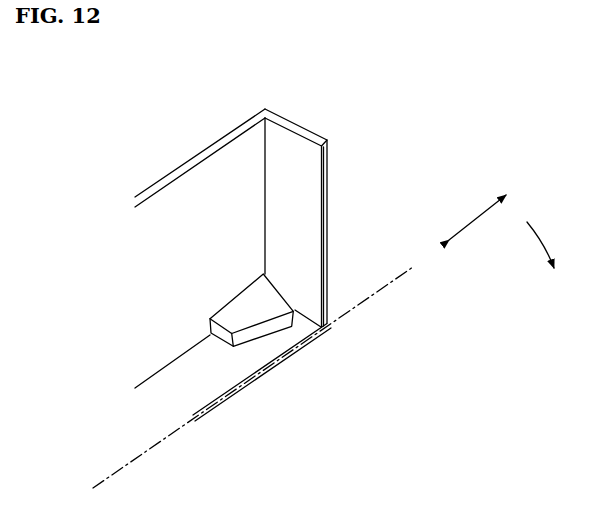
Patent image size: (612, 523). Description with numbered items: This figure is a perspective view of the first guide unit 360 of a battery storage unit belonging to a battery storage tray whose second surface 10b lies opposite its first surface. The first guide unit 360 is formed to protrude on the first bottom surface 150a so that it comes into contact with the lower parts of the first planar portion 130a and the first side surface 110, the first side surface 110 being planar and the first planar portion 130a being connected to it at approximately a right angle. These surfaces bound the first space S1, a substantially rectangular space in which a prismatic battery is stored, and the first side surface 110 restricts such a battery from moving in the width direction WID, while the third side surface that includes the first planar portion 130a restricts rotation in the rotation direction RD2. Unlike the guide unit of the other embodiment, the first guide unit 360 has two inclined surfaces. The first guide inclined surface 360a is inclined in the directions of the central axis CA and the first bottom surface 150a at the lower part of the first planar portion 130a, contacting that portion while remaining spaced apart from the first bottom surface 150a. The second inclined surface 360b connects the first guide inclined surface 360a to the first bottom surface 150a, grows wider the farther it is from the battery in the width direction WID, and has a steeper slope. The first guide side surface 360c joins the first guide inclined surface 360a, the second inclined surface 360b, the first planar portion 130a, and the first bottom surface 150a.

The first side surface 110 is at (300, 145).
The first planar portion 130a is at (205, 173).
The second surface 10b is at (283, 362).
The first guide unit 360 is at (310, 340).
The first guide inclined surface 360a is at (268, 292).
The second inclined surface 360b is at (280, 307).
The first guide side surface 360c is at (221, 342).
The first bottom surface 150a is at (198, 397).
The first space S1 is at (151, 311).
The central axis CA is at (271, 362).
The width direction WID is at (495, 202).
The rotation direction RD2 is at (553, 239).